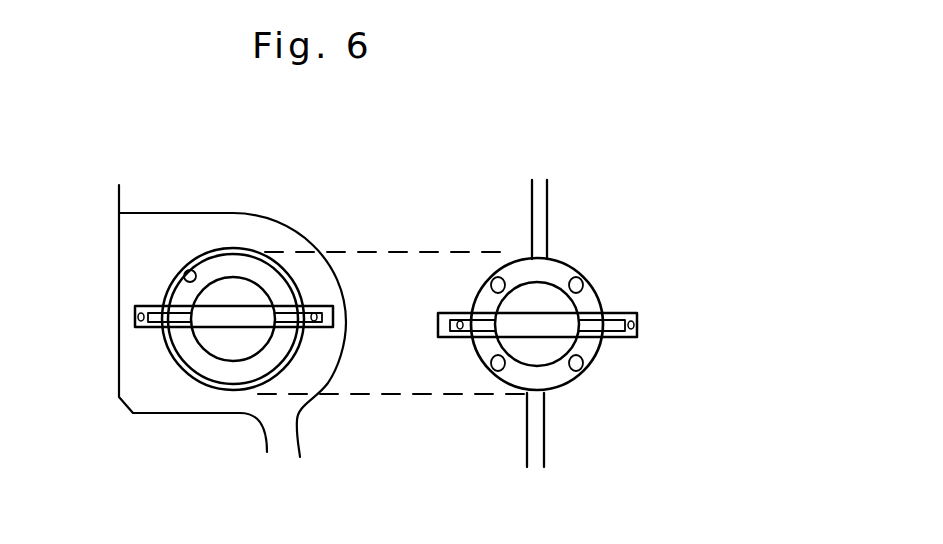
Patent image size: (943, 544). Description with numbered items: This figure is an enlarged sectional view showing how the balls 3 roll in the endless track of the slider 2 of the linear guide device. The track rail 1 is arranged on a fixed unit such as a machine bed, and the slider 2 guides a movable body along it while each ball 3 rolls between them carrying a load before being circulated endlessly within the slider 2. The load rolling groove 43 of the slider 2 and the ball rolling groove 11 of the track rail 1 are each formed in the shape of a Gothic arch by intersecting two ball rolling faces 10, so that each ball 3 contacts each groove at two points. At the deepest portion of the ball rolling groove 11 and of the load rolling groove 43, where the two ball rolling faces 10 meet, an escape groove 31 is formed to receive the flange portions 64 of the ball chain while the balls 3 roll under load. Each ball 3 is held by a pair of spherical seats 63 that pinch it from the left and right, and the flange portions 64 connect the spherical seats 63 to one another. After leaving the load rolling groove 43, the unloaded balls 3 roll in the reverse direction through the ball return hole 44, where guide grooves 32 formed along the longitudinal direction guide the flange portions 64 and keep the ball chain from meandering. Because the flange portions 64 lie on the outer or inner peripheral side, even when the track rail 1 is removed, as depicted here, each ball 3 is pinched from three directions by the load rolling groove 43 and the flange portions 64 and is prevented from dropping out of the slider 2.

The track rail 1 is at (545, 177).
The slider 2 is at (247, 432).
The ball 3 is at (200, 360).
The ball rolling face 10 is at (505, 265).
The ball rolling groove 11 is at (602, 370).
The escape groove 31 is at (445, 312).
The guide groove 32 is at (138, 315).
The load rolling groove 43 is at (458, 367).
The ball return hole 44 is at (177, 283).
The spherical seat 63 is at (228, 288).
The flange portion 64 is at (307, 322).